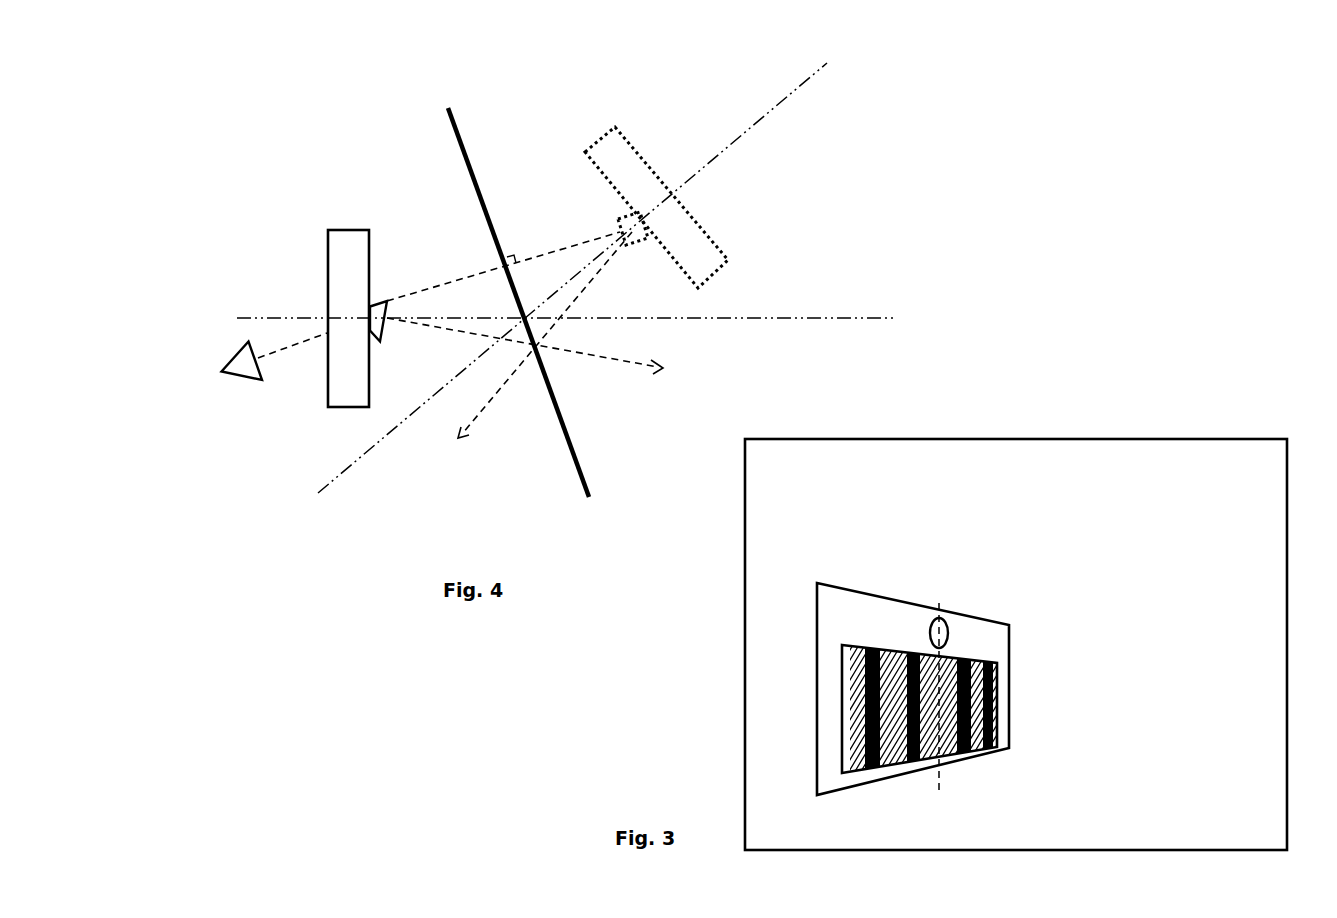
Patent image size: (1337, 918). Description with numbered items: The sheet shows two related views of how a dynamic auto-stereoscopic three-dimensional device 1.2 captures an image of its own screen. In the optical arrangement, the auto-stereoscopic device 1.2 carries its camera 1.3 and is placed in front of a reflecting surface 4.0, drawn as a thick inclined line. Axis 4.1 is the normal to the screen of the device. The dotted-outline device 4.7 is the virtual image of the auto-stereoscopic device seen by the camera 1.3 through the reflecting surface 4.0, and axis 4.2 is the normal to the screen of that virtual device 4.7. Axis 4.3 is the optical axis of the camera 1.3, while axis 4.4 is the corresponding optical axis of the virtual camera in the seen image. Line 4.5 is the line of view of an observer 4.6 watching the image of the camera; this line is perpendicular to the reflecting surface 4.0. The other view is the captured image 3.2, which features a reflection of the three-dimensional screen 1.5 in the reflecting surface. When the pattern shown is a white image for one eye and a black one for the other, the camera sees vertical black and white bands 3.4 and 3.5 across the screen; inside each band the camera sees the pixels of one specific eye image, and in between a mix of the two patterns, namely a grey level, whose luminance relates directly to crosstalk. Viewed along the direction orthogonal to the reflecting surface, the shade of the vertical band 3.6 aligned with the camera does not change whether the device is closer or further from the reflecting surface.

In FIG. 4, the dynamic auto-stereoscopic 3D device 1.2 is at (348, 306).
In FIG. 4, the camera 1.3 is at (386, 310).
In FIG. 3, the 3D screen 1.5 is at (843, 778).
In FIG. 3, the captured image 3.2 is at (1128, 458).
In FIG. 3, the vertical black band 3.4 is at (873, 645).
In FIG. 3, the vertical white band 3.5 is at (900, 655).
In FIG. 3, the vertical band aligned with the camera 3.6 is at (943, 710).
In FIG. 4, the reflecting surface 4.0 is at (540, 302).
In FIG. 4, the axis normal to the screen 4.1 is at (566, 307).
In FIG. 4, the axis normal to the virtual device screen 4.2 is at (572, 278).
In FIG. 4, the optical axis of the camera 4.3 is at (540, 356).
In FIG. 4, the optical axis of the virtual camera 4.4 is at (545, 344).
In FIG. 4, the line of view of the observer 4.5 is at (503, 264).
In FIG. 4, the observer 4.6 is at (242, 380).
In FIG. 4, the virtual image of the 3D device 4.7 is at (640, 155).